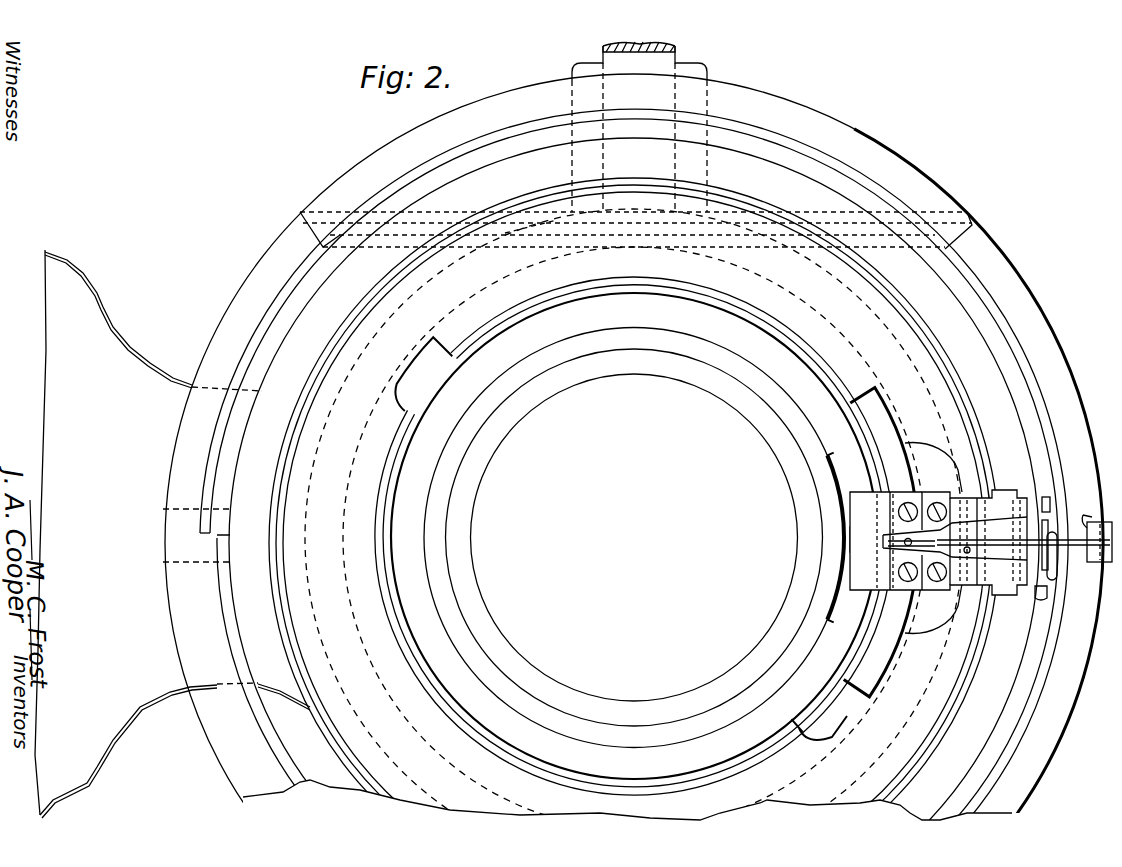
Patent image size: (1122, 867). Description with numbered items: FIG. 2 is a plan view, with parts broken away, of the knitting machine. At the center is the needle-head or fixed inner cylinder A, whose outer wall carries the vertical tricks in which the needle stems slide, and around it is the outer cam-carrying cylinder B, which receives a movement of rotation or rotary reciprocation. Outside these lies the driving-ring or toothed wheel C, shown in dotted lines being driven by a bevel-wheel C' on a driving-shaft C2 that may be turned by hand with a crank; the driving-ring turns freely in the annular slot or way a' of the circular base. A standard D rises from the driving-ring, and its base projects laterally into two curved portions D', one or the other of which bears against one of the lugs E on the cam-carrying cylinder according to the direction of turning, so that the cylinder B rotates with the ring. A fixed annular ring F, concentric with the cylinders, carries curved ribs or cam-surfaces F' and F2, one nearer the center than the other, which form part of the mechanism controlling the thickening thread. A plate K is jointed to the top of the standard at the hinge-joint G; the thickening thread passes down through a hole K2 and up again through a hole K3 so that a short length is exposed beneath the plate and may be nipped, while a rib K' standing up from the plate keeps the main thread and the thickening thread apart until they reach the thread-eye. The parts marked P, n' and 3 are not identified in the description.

The needle-head or fixed inner cylinder A is at (452, 490).
The outer or cam-carrying cylinder B is at (378, 491).
The driving-ring or toothed wheel C is at (634, 538).
The bevel-wheel C' is at (628, 220).
The driving-shaft C2 is at (641, 126).
The standard D is at (894, 538).
The curved portions of the standard base D' is at (880, 542).
The projections or lugs E is at (621, 538).
The fixed annular ring F is at (636, 470).
The curved rib or cam-surface F' is at (614, 467).
The curved rib or cam-surface F2 is at (272, 597).
The annular slot or way a' is at (634, 522).
The hinge-joint G is at (1000, 596).
The plate K is at (1039, 562).
The rib K' is at (1023, 515).
The hole K2 is at (968, 556).
The hole K3 is at (884, 556).
The pin P is at (1042, 596).
The pin n' is at (1040, 484).
The cap nut 3 is at (1092, 517).